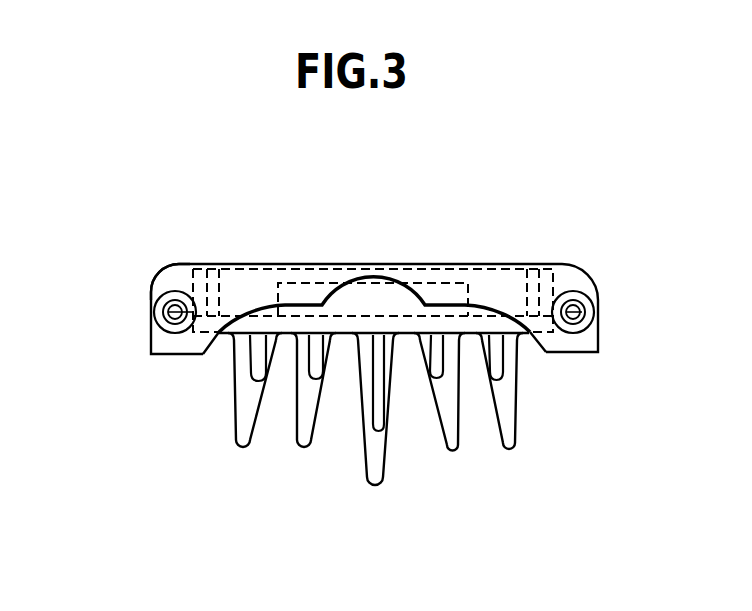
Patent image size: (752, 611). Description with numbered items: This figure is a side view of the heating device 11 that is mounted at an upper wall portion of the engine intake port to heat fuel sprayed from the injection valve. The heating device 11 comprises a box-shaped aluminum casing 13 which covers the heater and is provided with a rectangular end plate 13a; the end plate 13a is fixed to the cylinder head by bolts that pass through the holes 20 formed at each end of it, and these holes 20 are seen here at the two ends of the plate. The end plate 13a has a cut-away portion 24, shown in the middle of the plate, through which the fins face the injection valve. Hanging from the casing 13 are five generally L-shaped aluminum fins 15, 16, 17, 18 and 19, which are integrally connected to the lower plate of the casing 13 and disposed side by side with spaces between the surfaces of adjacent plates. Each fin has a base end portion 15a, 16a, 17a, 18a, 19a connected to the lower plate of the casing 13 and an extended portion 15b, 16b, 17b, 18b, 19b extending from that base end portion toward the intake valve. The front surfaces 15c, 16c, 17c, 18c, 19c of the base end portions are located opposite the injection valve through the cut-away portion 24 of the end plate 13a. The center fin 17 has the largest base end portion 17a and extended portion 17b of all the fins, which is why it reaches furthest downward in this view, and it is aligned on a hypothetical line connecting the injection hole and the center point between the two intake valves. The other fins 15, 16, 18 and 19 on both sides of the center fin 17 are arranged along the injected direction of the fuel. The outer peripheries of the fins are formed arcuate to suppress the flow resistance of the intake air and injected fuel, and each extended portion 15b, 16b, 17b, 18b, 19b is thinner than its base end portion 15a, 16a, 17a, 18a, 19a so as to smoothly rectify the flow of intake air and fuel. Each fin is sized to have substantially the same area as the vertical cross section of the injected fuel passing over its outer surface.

The heating device 11 is at (434, 252).
The casing 13 is at (197, 262).
The end plate 13a is at (182, 278).
The fin 15 is at (233, 391).
The base end portion 15a is at (255, 340).
The extended portion 15b is at (233, 416).
The front surface 15c is at (256, 363).
The fin 16 is at (292, 396).
The base end portion 16a is at (313, 340).
The extended portion 16b is at (291, 428).
The front surface 16c is at (312, 377).
The center fin 17 is at (361, 407).
The base end portion 17a is at (380, 347).
The extended portion 17b is at (382, 470).
The front surface 17c is at (382, 418).
The fin 18 is at (456, 456).
The base end portion 18a is at (441, 340).
The extended portion 18b is at (460, 410).
The front surface 18c is at (435, 372).
The fin 19 is at (519, 394).
The base end portion 19a is at (494, 342).
The extended portion 19b is at (516, 427).
The front surface 19c is at (493, 361).
The holes 20 is at (176, 312).
The cut-away portion 24 is at (358, 292).